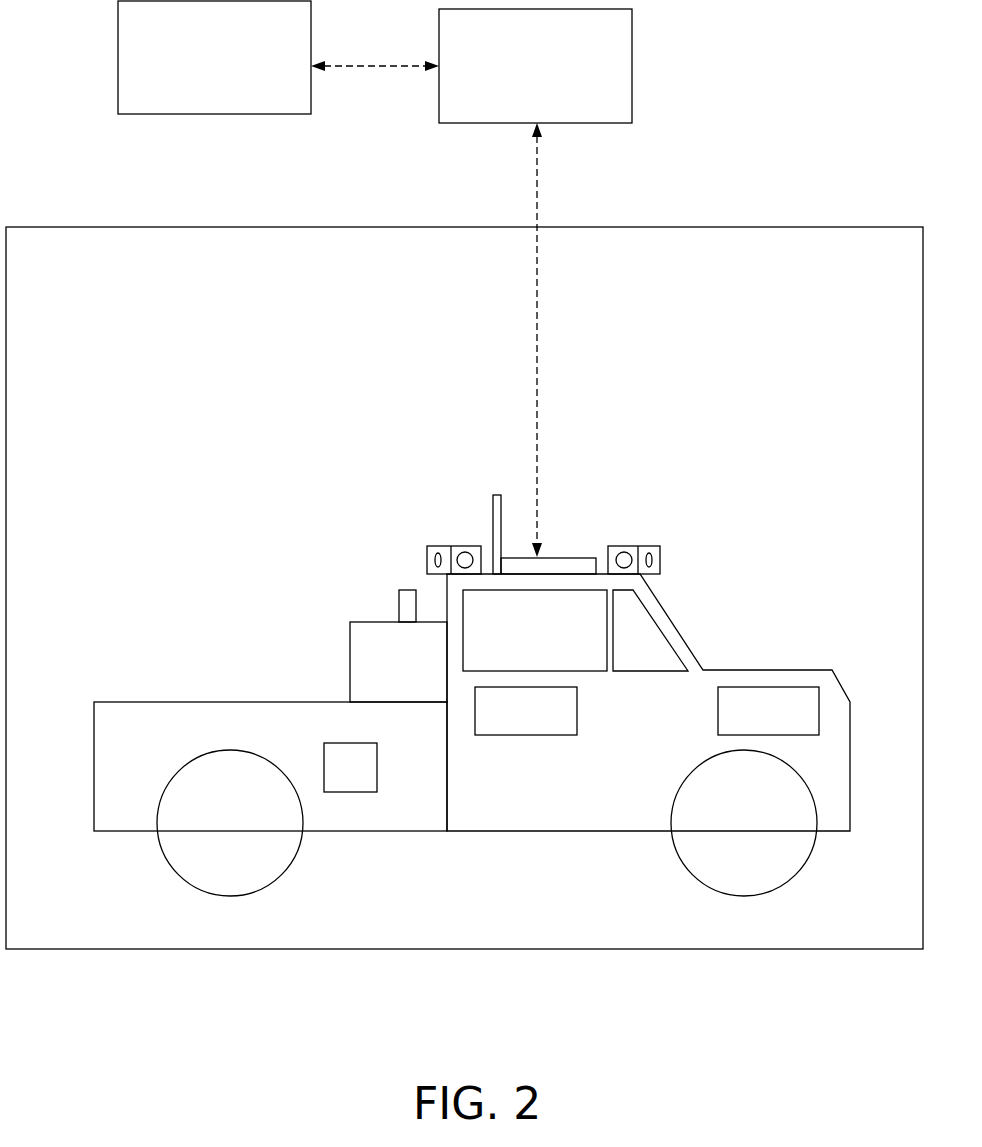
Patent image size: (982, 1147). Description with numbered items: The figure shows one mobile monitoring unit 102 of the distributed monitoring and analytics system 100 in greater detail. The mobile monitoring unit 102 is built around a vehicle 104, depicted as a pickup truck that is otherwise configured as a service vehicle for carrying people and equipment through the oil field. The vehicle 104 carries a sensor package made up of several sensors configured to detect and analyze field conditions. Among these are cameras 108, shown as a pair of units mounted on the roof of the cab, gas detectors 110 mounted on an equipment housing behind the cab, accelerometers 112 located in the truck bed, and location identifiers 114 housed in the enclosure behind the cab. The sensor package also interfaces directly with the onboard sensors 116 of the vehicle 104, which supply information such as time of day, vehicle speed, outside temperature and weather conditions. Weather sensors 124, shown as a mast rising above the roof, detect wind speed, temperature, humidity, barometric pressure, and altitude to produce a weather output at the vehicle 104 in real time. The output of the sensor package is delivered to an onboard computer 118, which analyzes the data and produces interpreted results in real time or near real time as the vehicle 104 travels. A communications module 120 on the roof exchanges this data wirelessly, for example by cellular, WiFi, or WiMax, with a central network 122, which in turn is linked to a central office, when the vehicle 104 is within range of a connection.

The distributed monitoring and analytics system 100 is at (763, 172).
The mobile monitoring unit 102 is at (643, 405).
The vehicle 104 is at (198, 727).
The cameras 108 is at (447, 547).
The gas detectors 110 is at (404, 590).
The accelerometers 112 is at (367, 779).
The location identifiers 114 is at (415, 675).
The onboard sensors 116 is at (778, 721).
The onboard computer 118 is at (543, 721).
The communications module 120 is at (553, 557).
The central network 122 is at (553, 89).
The weather sensors 124 is at (492, 493).